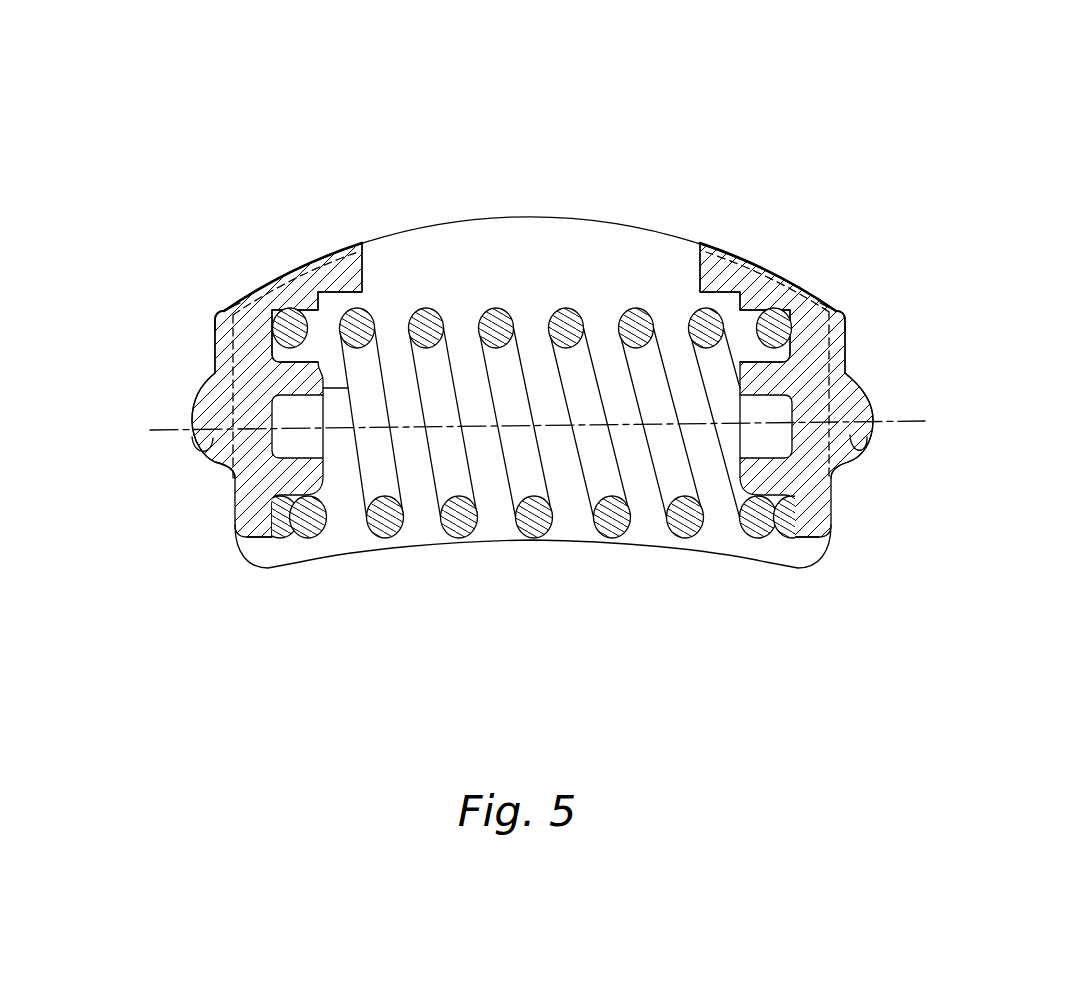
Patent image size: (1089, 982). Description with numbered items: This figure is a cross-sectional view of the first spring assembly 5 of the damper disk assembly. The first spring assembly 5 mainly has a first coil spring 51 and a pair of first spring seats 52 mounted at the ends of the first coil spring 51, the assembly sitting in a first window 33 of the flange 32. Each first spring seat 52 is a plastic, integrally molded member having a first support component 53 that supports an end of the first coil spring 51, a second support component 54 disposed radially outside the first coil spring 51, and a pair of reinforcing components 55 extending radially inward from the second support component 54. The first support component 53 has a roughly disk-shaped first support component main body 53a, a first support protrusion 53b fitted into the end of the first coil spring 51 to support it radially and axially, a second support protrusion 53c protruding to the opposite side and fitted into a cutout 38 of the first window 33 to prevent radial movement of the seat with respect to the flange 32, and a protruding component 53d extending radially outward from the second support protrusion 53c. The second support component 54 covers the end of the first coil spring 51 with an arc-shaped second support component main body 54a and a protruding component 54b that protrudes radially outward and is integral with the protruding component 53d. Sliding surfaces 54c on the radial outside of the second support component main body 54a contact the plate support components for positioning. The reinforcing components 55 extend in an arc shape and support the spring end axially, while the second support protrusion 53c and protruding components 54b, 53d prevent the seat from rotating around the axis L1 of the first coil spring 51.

The first spring assembly 5 is at (567, 370).
The flange 32 is at (463, 570).
The first window 33 is at (580, 216).
The cutout 38 is at (858, 455).
The first coil spring 51 is at (430, 317).
The first spring seat 52 is at (863, 294).
The first support component 53 is at (852, 529).
The first support component main body 53a is at (840, 352).
The first support protrusion 53b is at (768, 470).
The second support protrusion 53c is at (868, 398).
The protruding component 53d is at (848, 333).
The second support component 54 is at (792, 250).
The second support component main body 54a is at (722, 276).
The protruding component 54b is at (697, 262).
The sliding surface 54c is at (828, 312).
The reinforcing component 55 is at (742, 300).
The axis of the first coil spring L1 is at (173, 433).